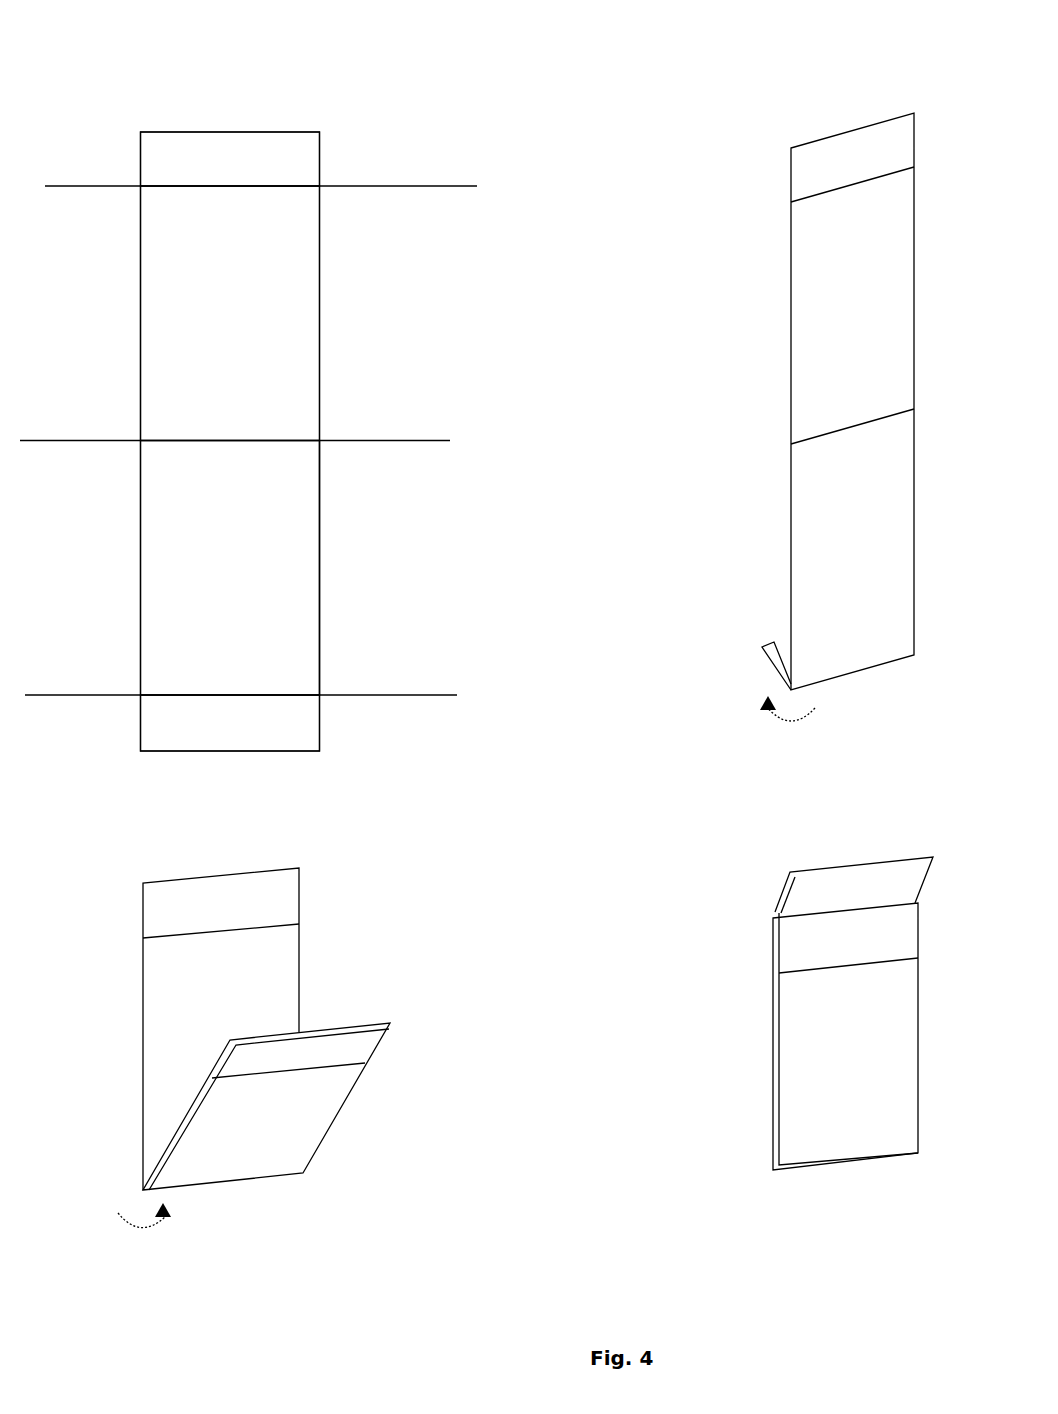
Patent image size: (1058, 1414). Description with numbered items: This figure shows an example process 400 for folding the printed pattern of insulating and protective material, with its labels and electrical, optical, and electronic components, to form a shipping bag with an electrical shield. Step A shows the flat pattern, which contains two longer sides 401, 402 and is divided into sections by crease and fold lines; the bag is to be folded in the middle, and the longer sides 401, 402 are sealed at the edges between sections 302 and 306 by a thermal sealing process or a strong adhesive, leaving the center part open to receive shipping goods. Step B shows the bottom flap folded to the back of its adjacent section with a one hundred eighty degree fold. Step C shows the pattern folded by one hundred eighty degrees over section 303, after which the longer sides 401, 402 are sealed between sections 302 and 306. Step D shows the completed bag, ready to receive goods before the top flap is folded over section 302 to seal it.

The folding sequence of blank 400 is at (573, 42).
The section 302 is at (483, 188).
The section 303 is at (355, 375).
The section 306 is at (473, 698).
The longer side 401 is at (130, 397).
The longer side 402 is at (325, 558).